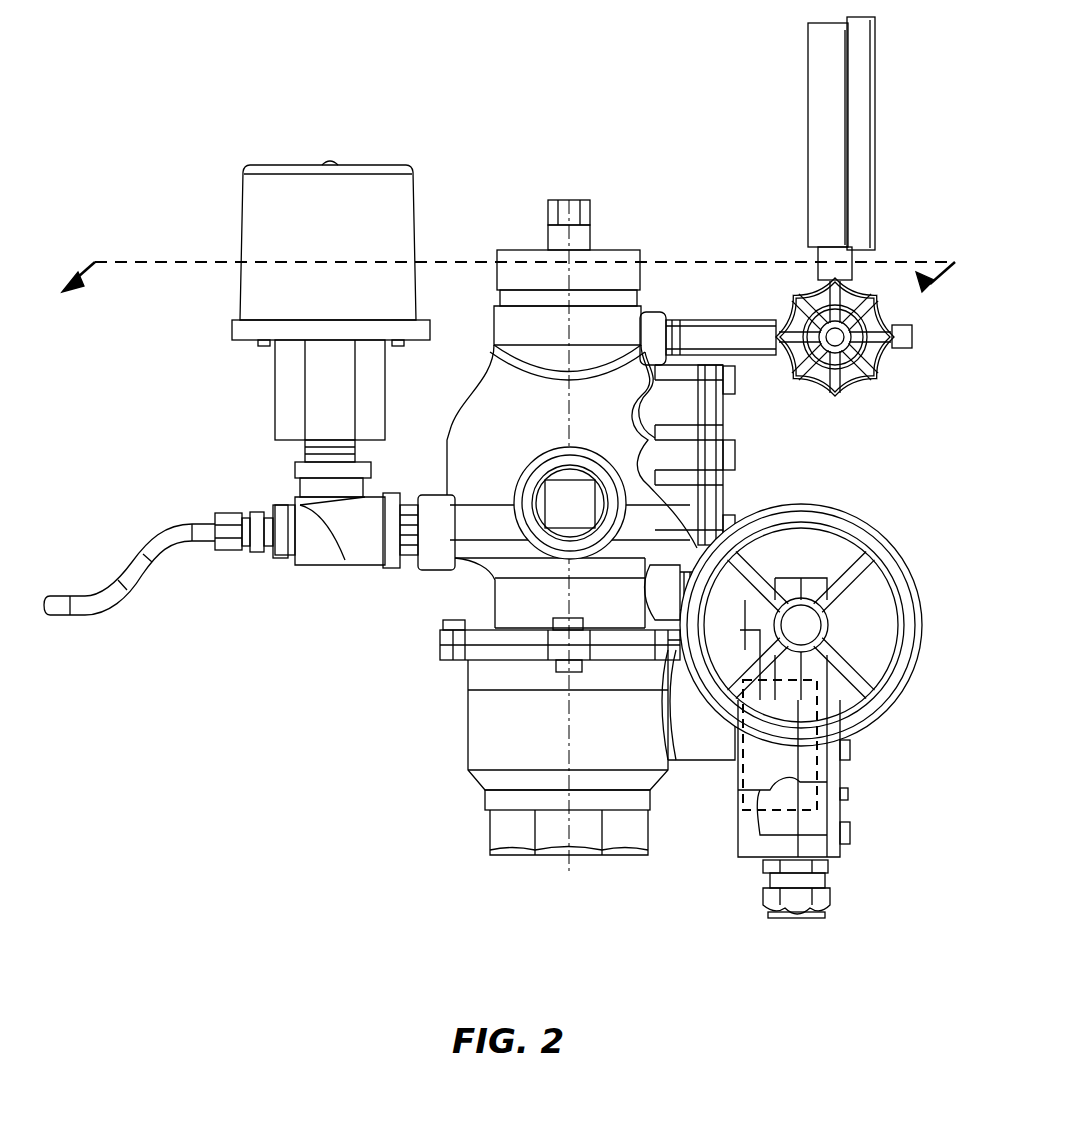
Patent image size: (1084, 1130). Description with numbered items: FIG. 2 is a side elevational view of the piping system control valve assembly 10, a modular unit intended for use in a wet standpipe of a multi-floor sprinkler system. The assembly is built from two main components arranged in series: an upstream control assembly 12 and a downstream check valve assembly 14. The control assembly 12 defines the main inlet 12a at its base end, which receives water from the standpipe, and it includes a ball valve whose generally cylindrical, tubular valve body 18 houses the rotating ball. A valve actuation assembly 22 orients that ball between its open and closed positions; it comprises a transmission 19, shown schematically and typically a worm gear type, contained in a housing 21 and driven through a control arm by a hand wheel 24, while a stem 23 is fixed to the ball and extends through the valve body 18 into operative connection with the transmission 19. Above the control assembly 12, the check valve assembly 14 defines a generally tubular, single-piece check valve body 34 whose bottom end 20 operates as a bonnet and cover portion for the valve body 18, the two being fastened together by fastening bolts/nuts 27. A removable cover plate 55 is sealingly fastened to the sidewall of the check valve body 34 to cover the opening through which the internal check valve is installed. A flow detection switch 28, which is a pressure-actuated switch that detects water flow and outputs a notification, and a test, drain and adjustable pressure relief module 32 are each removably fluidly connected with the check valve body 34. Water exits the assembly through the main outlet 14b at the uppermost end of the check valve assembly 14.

The piping system control valve assembly 10 is at (368, 82).
The flow detection switch 28 is at (292, 164).
The test, drain and adjustable pressure relief module 32 is at (545, 234).
The main outlet 14b is at (609, 250).
The check valve assembly 14 is at (449, 432).
The cover plate 55 is at (725, 440).
The hand wheel 24 is at (797, 505).
The check valve body 34 is at (497, 601).
The bottom end (bonnet) 20 is at (478, 624).
The fastening bolts/nuts 27 is at (446, 624).
The control assembly 12 is at (466, 734).
The valve body 18 is at (497, 752).
The main inlet 12a is at (536, 856).
The stem 23 is at (693, 760).
The transmission 19 is at (852, 752).
The valve actuation assembly 22 is at (848, 774).
The housing 21 is at (850, 815).